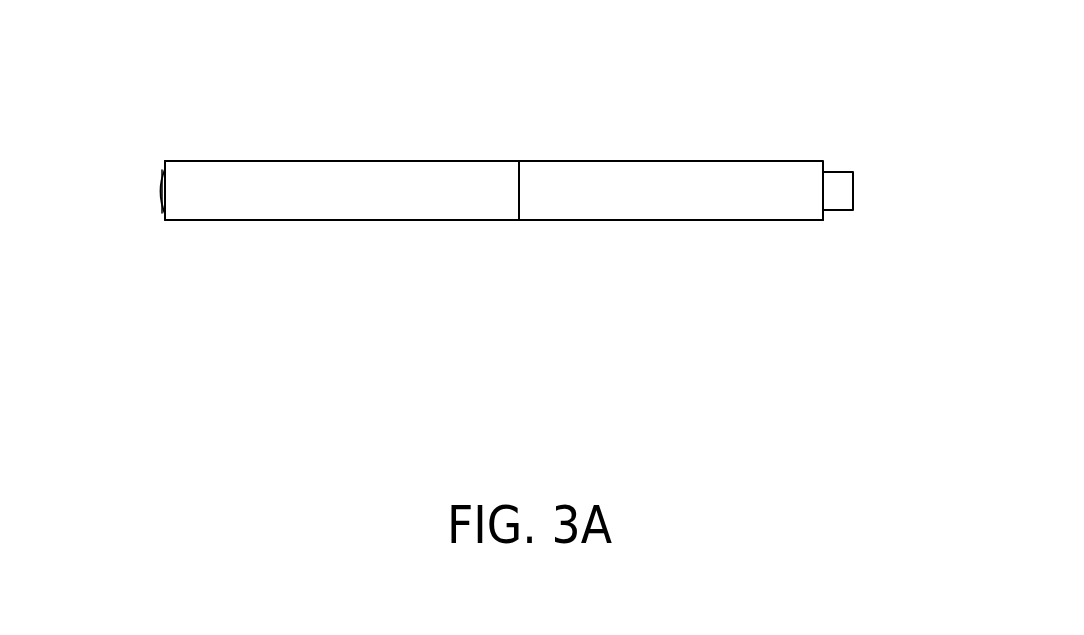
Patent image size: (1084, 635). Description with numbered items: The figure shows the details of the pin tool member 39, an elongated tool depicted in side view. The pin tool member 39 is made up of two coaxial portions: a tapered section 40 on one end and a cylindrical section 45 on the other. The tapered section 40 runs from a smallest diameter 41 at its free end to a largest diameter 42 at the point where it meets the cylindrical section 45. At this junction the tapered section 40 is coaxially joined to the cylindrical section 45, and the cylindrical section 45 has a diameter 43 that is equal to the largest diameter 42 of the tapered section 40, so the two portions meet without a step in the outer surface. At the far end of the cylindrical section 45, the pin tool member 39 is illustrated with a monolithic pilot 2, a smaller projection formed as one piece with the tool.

The monolithic pilot 2 is at (885, 145).
The pin tool member 39 is at (342, 263).
The tapered section 40 is at (342, 131).
The smallest diameter 41 is at (109, 128).
The largest diameter 42 is at (603, 131).
The diameter 43 is at (671, 145).
The cylindrical section 45 is at (671, 273).